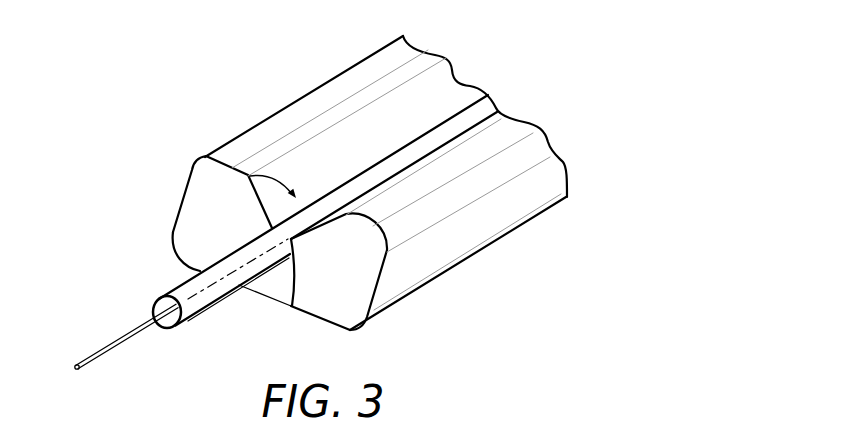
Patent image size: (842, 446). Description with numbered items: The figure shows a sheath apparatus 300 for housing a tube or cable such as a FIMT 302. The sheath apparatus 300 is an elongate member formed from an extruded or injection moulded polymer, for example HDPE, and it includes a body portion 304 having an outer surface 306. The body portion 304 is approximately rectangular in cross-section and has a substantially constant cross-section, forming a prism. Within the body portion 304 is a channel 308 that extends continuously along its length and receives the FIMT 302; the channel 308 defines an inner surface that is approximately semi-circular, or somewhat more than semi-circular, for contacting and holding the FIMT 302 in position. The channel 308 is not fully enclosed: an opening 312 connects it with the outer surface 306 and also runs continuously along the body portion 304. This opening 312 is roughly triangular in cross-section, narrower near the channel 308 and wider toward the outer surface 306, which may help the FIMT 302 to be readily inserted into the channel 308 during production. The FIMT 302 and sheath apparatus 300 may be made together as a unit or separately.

The sheath apparatus 300 is at (363, 191).
The tube or cable (FIMT) 302 is at (198, 302).
The body portion 304 is at (442, 268).
The outer surface 306 is at (232, 168).
The channel 308 is at (293, 306).
The opening 312 is at (248, 176).